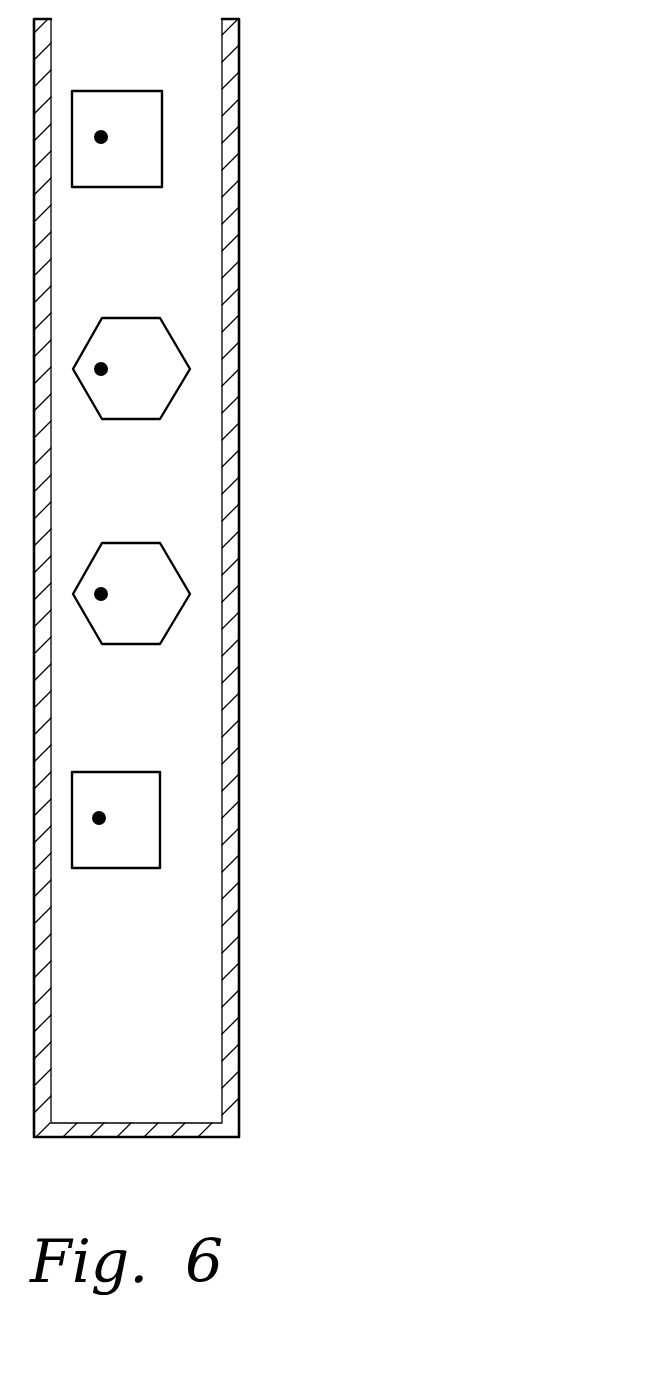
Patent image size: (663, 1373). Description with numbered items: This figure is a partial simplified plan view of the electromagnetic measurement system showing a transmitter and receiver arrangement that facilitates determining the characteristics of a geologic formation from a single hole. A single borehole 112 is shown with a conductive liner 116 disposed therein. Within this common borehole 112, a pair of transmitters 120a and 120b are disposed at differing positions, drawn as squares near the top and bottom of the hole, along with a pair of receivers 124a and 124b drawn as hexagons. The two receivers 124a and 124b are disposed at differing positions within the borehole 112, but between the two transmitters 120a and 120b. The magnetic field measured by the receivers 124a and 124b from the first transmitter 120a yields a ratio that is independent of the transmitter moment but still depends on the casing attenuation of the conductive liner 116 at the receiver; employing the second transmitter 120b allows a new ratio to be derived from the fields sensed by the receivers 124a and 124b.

The borehole 112 is at (193, 258).
The conductive liner 116 is at (240, 440).
The transmitter 120a is at (153, 157).
The transmitter 120b is at (153, 817).
The receiver 124a is at (155, 375).
The receiver 124b is at (155, 597).